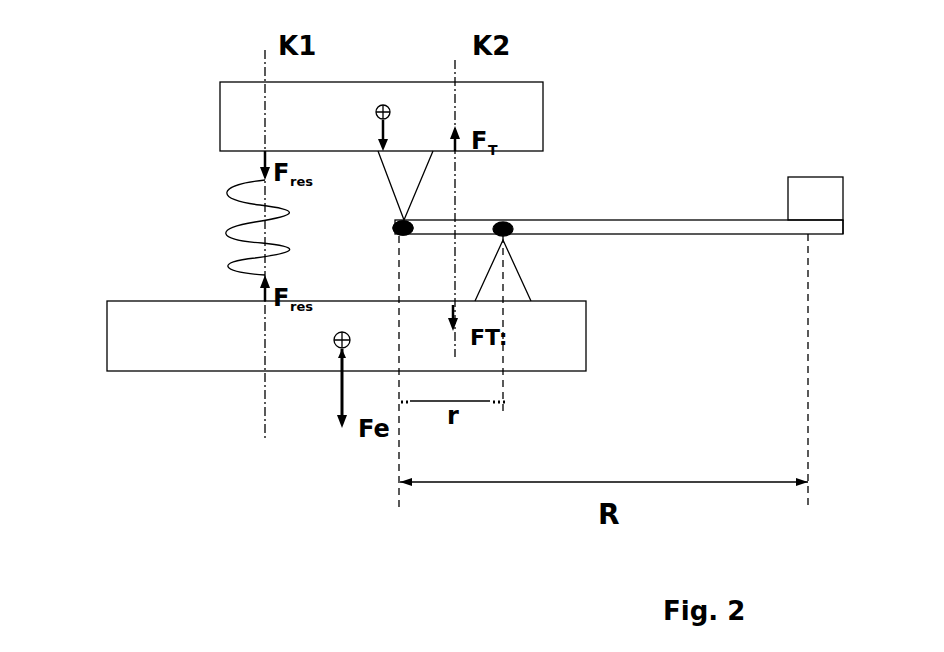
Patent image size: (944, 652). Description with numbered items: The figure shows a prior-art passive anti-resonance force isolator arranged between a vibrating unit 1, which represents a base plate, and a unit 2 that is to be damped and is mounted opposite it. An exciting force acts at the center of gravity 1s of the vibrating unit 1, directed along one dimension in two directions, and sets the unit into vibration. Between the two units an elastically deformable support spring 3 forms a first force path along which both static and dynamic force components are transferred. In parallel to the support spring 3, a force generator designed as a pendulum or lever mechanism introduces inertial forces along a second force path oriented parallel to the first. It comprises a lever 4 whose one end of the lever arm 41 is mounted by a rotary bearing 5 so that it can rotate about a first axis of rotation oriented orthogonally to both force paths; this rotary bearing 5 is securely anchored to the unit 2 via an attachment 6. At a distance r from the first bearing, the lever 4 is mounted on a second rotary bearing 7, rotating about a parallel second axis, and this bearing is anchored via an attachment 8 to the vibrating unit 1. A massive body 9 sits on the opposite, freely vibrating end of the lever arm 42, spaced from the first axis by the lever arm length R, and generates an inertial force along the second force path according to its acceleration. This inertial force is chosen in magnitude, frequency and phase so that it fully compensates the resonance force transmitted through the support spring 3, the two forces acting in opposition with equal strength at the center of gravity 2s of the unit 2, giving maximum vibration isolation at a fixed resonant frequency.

The vibrating unit 1 is at (107, 301).
The unit to be damped 2 is at (220, 82).
The support spring 3 is at (205, 212).
The lever 4 is at (643, 218).
The rotary bearing 5 is at (400, 228).
The attachment 6 is at (388, 180).
The second rotary bearing 7 is at (538, 190).
The attachment 8 is at (527, 282).
The massive body 9 is at (815, 198).
The end of the lever arm 41 is at (400, 228).
The end of the lever arm 42 is at (833, 234).
The center of gravity 1s is at (362, 374).
The center of gravity 2s is at (402, 125).